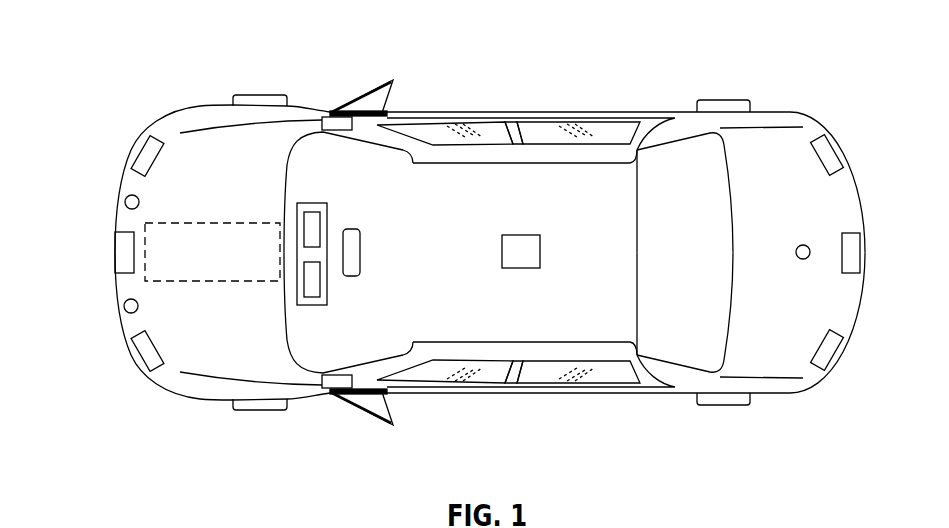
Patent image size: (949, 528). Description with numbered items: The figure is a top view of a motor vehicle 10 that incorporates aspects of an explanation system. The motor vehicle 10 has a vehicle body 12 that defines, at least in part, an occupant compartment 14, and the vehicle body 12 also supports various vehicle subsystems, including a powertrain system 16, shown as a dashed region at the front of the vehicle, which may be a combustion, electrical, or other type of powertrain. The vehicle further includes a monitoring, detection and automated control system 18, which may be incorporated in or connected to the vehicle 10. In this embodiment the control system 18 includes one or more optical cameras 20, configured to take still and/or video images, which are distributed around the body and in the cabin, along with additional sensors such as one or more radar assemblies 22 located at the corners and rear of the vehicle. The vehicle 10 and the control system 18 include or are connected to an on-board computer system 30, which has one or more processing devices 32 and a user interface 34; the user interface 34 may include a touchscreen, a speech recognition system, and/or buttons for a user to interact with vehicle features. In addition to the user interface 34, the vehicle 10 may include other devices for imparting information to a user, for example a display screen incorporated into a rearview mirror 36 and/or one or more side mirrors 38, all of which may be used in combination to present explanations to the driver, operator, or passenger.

The motor vehicle 10 is at (567, 110).
The vehicle body 12 is at (720, 130).
The occupant compartment 14 is at (570, 331).
The powertrain system 16 is at (243, 273).
The monitoring, detection and automated control system 18 is at (488, 44).
The optical cameras 20 is at (152, 157).
The radar assemblies 22 is at (125, 200).
The on-board computer system 30 is at (284, 202).
The processing devices 32 is at (313, 282).
The user interface 34 is at (313, 222).
The rearview mirror 36 is at (363, 246).
The side mirrors 38 is at (380, 80).